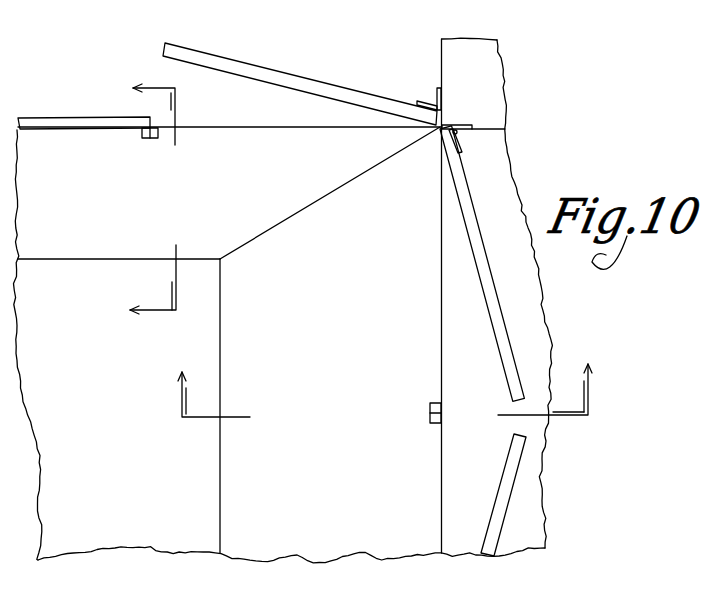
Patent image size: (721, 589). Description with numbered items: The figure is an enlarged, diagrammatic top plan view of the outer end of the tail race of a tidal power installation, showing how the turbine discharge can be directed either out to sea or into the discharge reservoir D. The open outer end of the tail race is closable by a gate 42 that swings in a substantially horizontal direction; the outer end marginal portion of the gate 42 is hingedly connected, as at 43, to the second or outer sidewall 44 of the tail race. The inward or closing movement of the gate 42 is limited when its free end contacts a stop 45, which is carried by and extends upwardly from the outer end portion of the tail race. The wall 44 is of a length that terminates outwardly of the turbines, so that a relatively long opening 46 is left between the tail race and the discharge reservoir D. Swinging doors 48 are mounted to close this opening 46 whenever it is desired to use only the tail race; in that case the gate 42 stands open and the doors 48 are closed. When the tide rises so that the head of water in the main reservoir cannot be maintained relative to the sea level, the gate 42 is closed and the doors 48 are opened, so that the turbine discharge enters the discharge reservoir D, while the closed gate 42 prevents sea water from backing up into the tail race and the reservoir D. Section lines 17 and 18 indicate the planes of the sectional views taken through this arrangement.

The gate 42 is at (57, 123).
The hinge connection 43 is at (438, 105).
The outer sidewall of the tail race 44 is at (483, 85).
The stop 45 is at (147, 136).
The opening 46 is at (494, 217).
The swinging door 48 is at (485, 275).
The discharge reservoir D is at (520, 294).
The section line 17 is at (139, 206).
The section line 18 is at (390, 378).